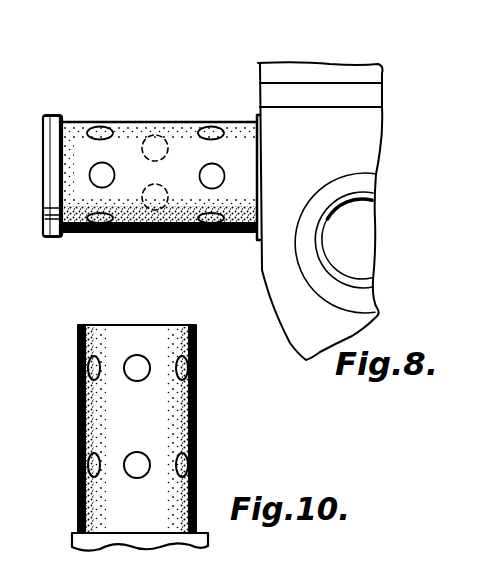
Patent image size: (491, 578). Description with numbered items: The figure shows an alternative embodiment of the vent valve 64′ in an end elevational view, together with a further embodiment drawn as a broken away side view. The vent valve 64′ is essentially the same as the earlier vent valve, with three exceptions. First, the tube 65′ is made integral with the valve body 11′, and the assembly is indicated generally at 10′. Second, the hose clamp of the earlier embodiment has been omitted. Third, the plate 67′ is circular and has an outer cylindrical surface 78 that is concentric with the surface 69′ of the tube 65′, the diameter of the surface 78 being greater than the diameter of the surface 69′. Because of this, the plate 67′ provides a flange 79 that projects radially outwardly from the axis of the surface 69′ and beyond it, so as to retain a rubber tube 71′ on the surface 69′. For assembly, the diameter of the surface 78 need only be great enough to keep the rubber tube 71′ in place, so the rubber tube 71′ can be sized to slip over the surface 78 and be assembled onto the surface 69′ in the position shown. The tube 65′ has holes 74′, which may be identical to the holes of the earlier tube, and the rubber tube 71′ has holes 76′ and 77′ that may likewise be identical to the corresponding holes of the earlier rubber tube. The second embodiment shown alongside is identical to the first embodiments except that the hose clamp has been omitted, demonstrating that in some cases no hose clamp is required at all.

The cylinder block 10′ is at (414, 77).
The valve body 11′ is at (376, 151).
The vent valve 64′ is at (155, 154).
The tube 65′ is at (43, 160).
The plate 67′ is at (54, 208).
The surface 69′ is at (221, 179).
The rubber tube 71′ is at (141, 120).
The holes 74′ is at (160, 134).
The holes 76′ is at (102, 120).
The holes 77′ is at (259, 115).
The outer cylindrical surface 78 is at (54, 237).
The flange 79 is at (63, 117).